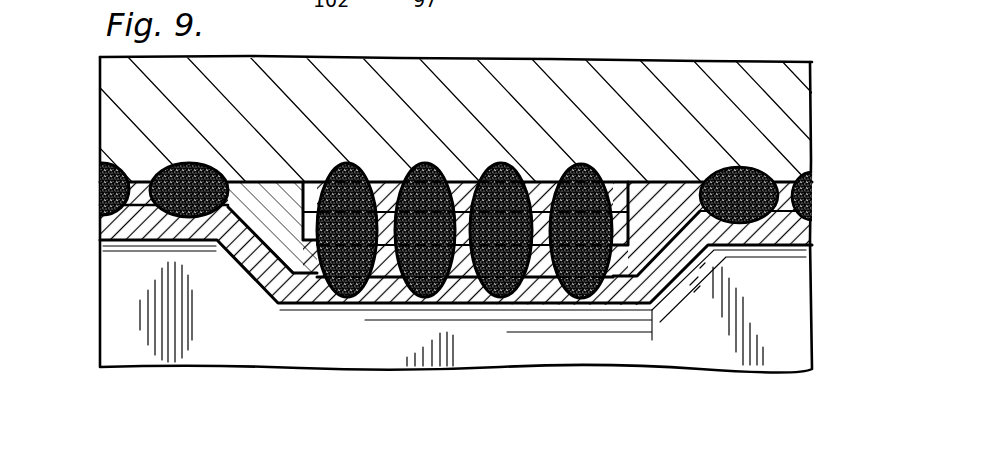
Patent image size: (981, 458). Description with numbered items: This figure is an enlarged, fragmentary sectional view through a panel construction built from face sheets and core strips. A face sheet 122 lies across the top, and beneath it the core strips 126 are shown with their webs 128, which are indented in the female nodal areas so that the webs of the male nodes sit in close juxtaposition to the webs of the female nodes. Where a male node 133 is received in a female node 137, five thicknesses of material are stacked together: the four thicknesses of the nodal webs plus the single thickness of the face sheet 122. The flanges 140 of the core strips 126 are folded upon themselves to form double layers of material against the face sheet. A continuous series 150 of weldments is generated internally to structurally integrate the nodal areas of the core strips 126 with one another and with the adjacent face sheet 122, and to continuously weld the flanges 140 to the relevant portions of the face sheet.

The face sheet 122 is at (715, 72).
The core strip 126 is at (816, 309).
The web 128 is at (708, 353).
The male node 133 is at (391, 292).
The female node 137 is at (543, 187).
The flange 140 is at (818, 228).
The continuous series of weldments 150 is at (773, 168).